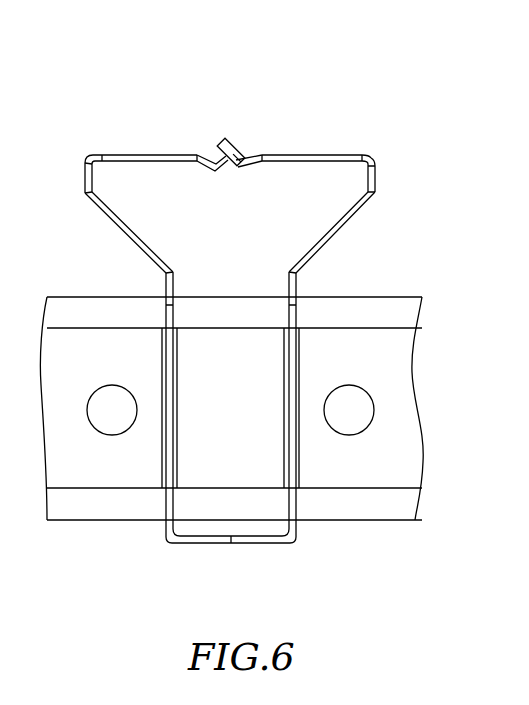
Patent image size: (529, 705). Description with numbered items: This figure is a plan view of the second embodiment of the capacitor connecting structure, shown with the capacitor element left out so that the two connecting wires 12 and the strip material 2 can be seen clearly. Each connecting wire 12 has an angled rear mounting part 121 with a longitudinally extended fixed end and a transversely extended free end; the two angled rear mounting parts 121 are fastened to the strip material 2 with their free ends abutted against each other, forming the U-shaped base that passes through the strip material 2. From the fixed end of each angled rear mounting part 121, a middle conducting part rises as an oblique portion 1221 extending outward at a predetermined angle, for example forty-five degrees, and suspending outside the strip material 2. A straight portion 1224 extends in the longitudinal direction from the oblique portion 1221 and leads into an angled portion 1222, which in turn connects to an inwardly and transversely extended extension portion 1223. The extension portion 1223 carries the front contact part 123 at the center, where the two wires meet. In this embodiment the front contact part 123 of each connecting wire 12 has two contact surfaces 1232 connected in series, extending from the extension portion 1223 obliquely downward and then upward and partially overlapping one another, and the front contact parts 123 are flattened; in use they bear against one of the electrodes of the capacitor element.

The strip material 2 is at (352, 513).
The connecting wire 12 is at (269, 300).
The angled rear mounting part 121 is at (166, 508).
The oblique portion 1221 is at (341, 226).
The angled portion 1222 is at (369, 159).
The extension portion 1223 is at (144, 155).
The straight portion 1224 is at (373, 180).
The front contact part 123 is at (229, 98).
The contact surfaces 1232 is at (221, 143).